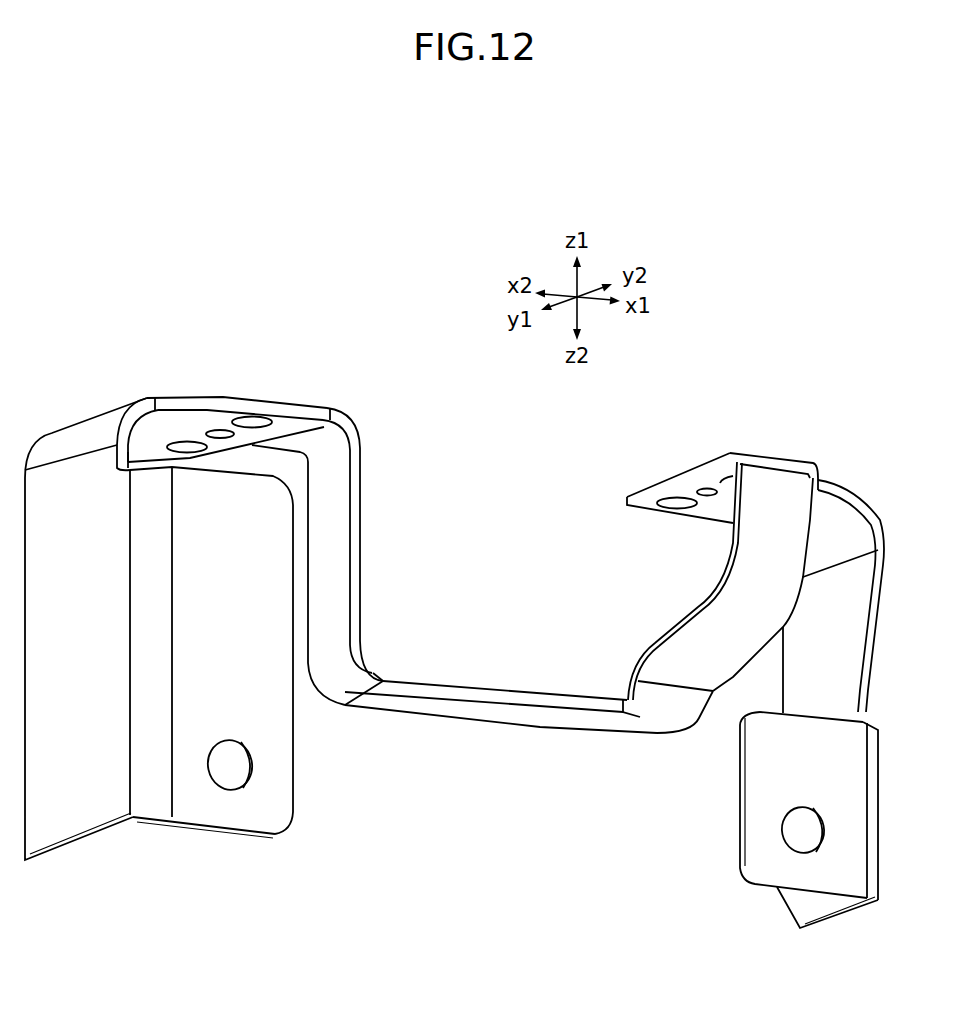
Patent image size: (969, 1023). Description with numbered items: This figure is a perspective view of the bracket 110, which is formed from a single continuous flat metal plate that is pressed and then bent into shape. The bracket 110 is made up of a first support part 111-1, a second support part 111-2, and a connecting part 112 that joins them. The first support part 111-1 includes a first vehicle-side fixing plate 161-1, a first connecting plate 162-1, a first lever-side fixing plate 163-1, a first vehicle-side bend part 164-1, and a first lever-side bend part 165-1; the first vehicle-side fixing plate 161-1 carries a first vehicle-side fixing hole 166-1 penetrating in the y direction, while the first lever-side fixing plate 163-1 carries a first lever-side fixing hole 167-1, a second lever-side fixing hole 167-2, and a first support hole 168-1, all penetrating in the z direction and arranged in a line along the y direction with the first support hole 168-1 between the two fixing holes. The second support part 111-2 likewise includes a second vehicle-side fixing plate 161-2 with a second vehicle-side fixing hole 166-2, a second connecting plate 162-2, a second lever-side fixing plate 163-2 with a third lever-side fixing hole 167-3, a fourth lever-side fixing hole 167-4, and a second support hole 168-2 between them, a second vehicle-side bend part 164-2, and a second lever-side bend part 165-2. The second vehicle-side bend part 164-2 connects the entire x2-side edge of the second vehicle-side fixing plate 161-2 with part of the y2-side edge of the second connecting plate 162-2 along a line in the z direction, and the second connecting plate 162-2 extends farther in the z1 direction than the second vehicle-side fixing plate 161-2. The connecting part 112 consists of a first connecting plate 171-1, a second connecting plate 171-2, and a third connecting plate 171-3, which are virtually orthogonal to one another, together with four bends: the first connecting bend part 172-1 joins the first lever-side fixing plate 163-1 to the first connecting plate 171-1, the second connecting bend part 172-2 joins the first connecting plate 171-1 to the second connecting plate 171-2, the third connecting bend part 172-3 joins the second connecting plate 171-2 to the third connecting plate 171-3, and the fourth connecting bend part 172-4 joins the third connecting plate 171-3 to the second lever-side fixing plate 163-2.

The bracket 110 is at (435, 296).
The first support part 111-1 is at (760, 770).
The second support part 111-2 is at (273, 720).
The connecting part 112 is at (537, 710).
The first vehicle-side fixing plate 161-1 is at (770, 862).
The second vehicle-side fixing plate 161-2 is at (270, 773).
The first connecting plate 162-1 is at (800, 910).
The second connecting plate 162-2 is at (80, 808).
The first lever-side fixing plate 163-1 is at (650, 490).
The second lever-side fixing plate 163-2 is at (300, 412).
The first vehicle-side bend part 164-1 is at (877, 868).
The second vehicle-side bend part 164-2 is at (152, 800).
The first lever-side bend part 165-1 is at (863, 510).
The second lever-side bend part 165-2 is at (80, 438).
The first vehicle-side fixing hole 166-1 is at (813, 823).
The second vehicle-side fixing hole 166-2 is at (235, 770).
The first lever-side fixing hole 167-1 is at (677, 505).
The second lever-side fixing hole 167-2 is at (722, 478).
The third lever-side fixing hole 167-3 is at (183, 440).
The fourth lever-side fixing hole 167-4 is at (265, 418).
The first support hole 168-1 is at (708, 495).
The second support hole 168-2 is at (205, 428).
The first connecting plate 171-1 is at (690, 638).
The second connecting plate 171-2 is at (483, 688).
The third connecting plate 171-3 is at (360, 550).
The first connecting bend part 172-1 is at (773, 463).
The second connecting bend part 172-2 is at (627, 697).
The third connecting bend part 172-3 is at (368, 665).
The fourth connecting bend part 172-4 is at (352, 432).